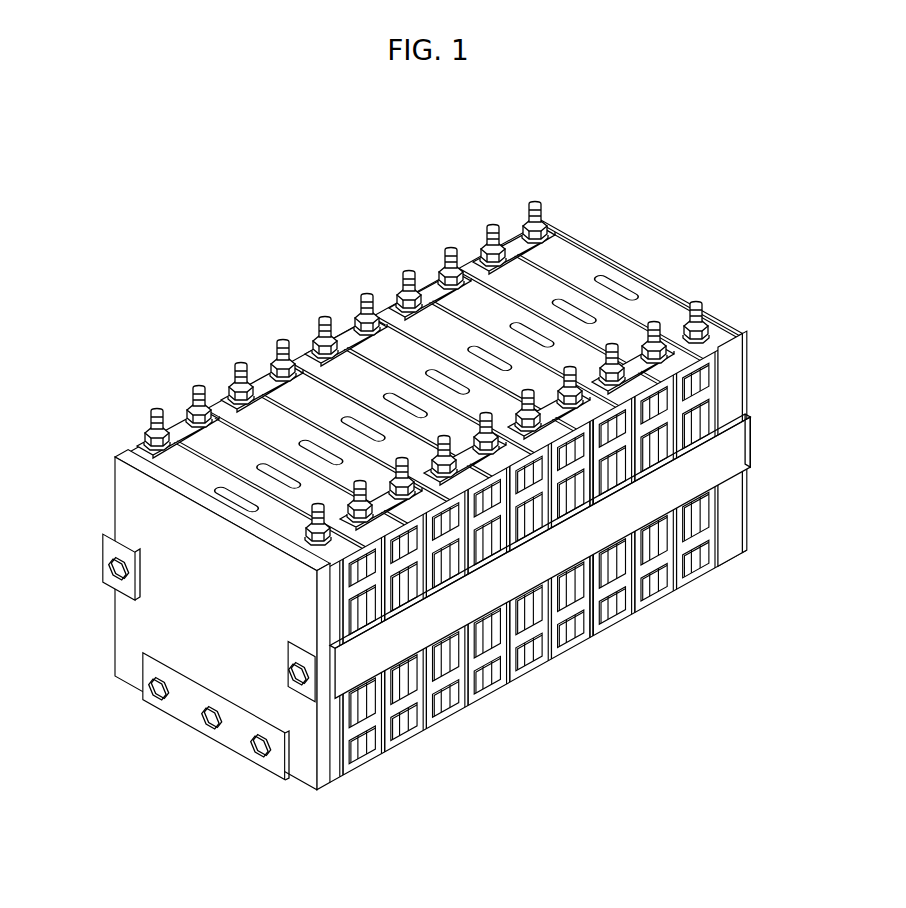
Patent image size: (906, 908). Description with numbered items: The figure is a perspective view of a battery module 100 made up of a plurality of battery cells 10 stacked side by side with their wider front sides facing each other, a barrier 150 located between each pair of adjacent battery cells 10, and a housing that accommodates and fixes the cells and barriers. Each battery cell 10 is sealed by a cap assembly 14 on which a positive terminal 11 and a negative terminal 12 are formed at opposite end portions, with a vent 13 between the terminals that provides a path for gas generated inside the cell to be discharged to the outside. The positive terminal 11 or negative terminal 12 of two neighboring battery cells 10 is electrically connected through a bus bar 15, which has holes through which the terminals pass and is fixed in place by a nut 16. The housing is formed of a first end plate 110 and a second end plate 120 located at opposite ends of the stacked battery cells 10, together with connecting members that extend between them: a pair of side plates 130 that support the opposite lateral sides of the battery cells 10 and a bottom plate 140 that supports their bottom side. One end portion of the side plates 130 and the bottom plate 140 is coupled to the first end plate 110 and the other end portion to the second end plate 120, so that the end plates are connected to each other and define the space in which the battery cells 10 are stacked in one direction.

The battery module 100 is at (428, 468).
The battery cell 10 is at (738, 548).
The positive terminal 11 is at (535, 208).
The negative terminal 12 is at (697, 305).
The vent 13 is at (620, 288).
The cap assembly 14 is at (582, 258).
The bus bar 15 is at (180, 432).
The nut 16 is at (240, 388).
The first end plate 110 is at (140, 622).
The second end plate 120 is at (748, 497).
The side plate 130 is at (102, 572).
The bottom plate 140 is at (188, 705).
The barrier 150 is at (515, 682).